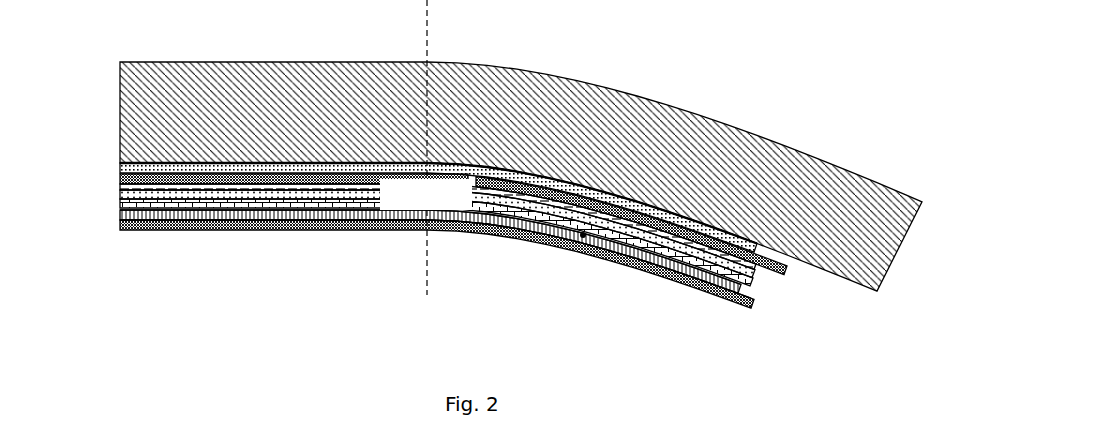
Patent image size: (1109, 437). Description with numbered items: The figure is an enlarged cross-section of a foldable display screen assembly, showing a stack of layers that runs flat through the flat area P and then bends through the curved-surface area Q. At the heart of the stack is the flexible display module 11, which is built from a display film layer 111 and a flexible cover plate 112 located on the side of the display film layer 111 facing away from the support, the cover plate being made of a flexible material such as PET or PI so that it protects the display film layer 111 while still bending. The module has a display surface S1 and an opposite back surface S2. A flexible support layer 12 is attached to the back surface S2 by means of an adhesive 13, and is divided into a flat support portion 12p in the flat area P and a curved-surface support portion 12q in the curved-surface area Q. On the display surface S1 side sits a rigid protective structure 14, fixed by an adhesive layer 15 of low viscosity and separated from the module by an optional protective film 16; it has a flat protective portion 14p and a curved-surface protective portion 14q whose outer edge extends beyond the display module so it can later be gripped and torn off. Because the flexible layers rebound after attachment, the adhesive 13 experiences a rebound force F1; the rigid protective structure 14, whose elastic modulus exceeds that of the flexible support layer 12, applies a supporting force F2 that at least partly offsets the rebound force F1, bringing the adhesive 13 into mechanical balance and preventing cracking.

The flexible display module 11 is at (392, 228).
The display film layer 111 is at (420, 235).
The flexible cover plate 112 is at (120, 179).
The flexible support layer 12 is at (397, 259).
The flat support portion 12p is at (358, 229).
The curved-surface support portion 12q is at (507, 237).
The adhesive 13 is at (187, 218).
The rigid protective structure 14 is at (483, 155).
The flat protective portion 14p is at (273, 78).
The curved-surface protective portion 14q is at (615, 105).
The adhesive layer 15 is at (680, 222).
The protective film 16 is at (411, 194).
The display surface S1 is at (231, 174).
The back surface S2 is at (233, 211).
The flat area P is at (427, 25).
The curved-surface area Q is at (484, 25).
The rebound force F1 is at (583, 235).
The supporting force F2 is at (583, 235).